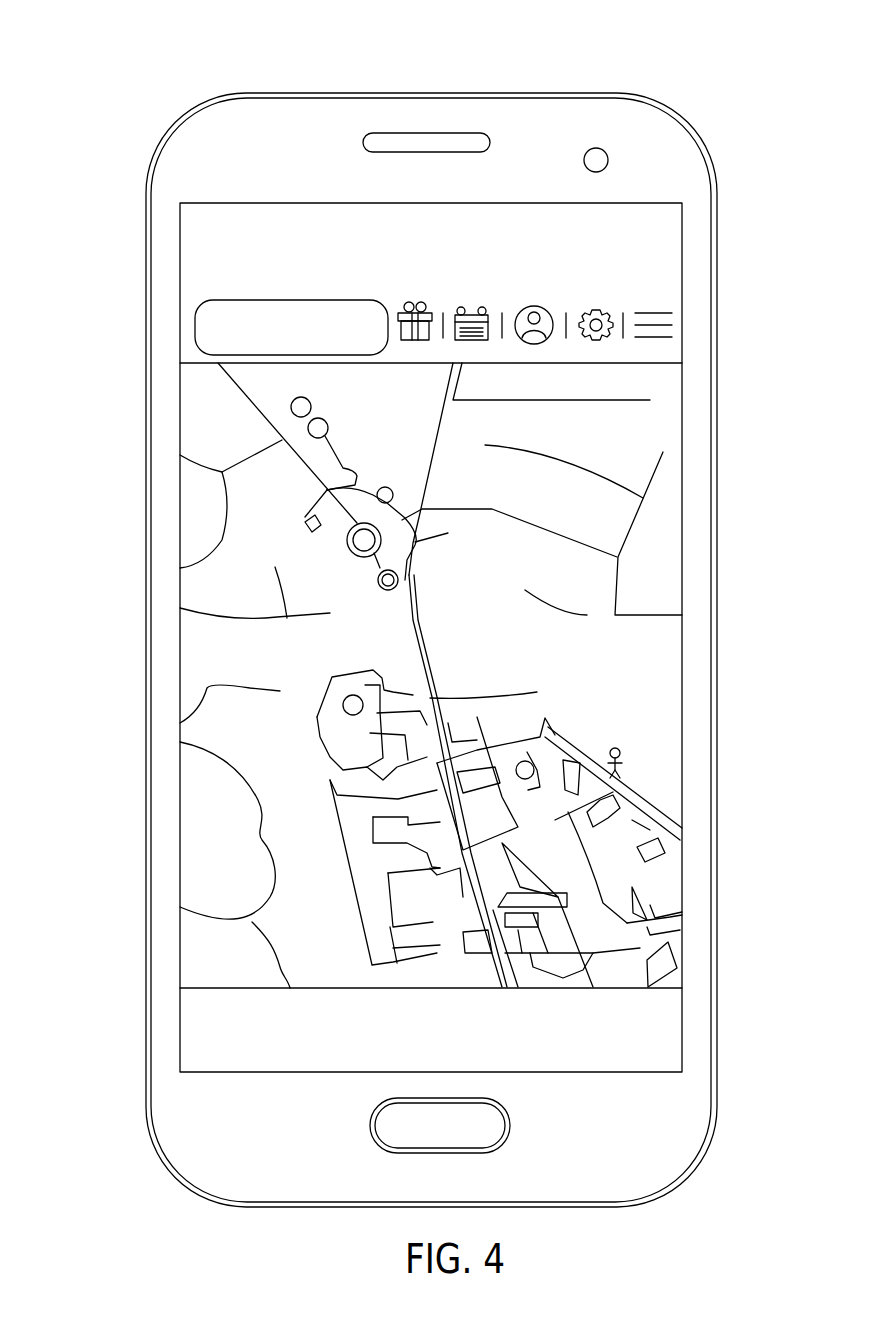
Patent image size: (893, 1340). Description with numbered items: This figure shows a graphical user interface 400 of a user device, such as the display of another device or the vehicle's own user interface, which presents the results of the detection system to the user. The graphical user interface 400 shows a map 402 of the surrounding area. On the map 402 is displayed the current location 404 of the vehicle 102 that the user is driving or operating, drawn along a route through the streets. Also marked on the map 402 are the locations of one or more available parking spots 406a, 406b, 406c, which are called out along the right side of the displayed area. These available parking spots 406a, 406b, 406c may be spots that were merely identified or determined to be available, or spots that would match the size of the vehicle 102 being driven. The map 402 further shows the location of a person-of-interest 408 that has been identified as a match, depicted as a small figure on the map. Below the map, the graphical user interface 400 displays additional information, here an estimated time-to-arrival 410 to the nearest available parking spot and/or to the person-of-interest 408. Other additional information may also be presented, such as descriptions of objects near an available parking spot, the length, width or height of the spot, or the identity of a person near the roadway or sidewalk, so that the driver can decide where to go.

The graphical user interface 400 is at (93, 80).
The map 402 is at (682, 508).
The vehicle 102 is at (400, 517).
The current location 404 is at (399, 585).
The available parking spot 406a is at (670, 960).
The available parking spot 406b is at (677, 910).
The available parking spot 406c is at (678, 828).
The person-of-interest 408 is at (625, 764).
The estimated time-to-arrival 410 is at (497, 1037).